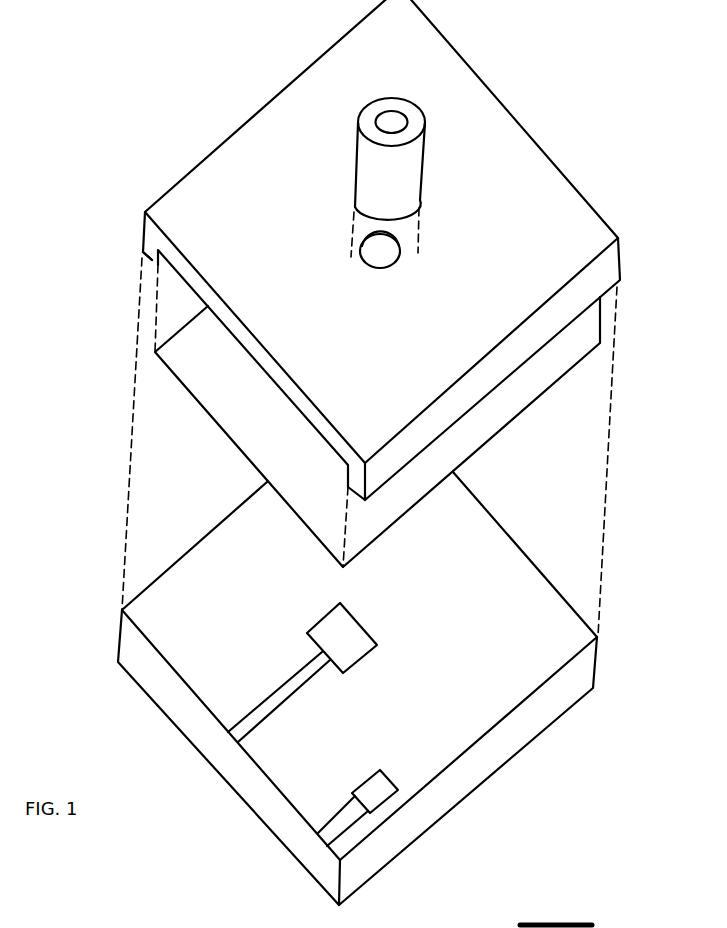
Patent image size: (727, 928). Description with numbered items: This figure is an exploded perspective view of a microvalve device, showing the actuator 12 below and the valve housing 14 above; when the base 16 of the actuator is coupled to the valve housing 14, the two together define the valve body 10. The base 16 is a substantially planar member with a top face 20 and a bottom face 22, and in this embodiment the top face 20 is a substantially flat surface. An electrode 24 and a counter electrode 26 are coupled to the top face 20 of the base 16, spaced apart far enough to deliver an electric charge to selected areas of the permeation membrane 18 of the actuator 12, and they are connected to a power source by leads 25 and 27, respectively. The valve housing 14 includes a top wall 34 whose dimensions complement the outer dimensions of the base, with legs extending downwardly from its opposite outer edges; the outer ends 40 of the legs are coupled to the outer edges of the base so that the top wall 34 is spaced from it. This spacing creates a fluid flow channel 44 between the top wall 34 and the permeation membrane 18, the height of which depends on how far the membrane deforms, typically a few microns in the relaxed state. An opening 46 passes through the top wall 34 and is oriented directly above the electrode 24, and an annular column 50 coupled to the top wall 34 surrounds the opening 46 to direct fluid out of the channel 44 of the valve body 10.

The valve body 10 is at (590, 130).
The actuator 12 is at (600, 637).
The valve housing 14 is at (617, 233).
The base substrate 16 is at (517, 737).
The permeation membrane 18 is at (517, 420).
The top face 20 is at (535, 678).
The bottom face 22 is at (418, 838).
The electrode 24 is at (358, 651).
The lead 25 is at (287, 693).
The counter electrode 26 is at (373, 782).
The lead 27 is at (340, 813).
The top wall 34 is at (562, 207).
The outer ends 40 is at (148, 260).
The fluid flow channel 44 is at (190, 287).
The opening 46 is at (387, 255).
The annular column 50 is at (407, 180).